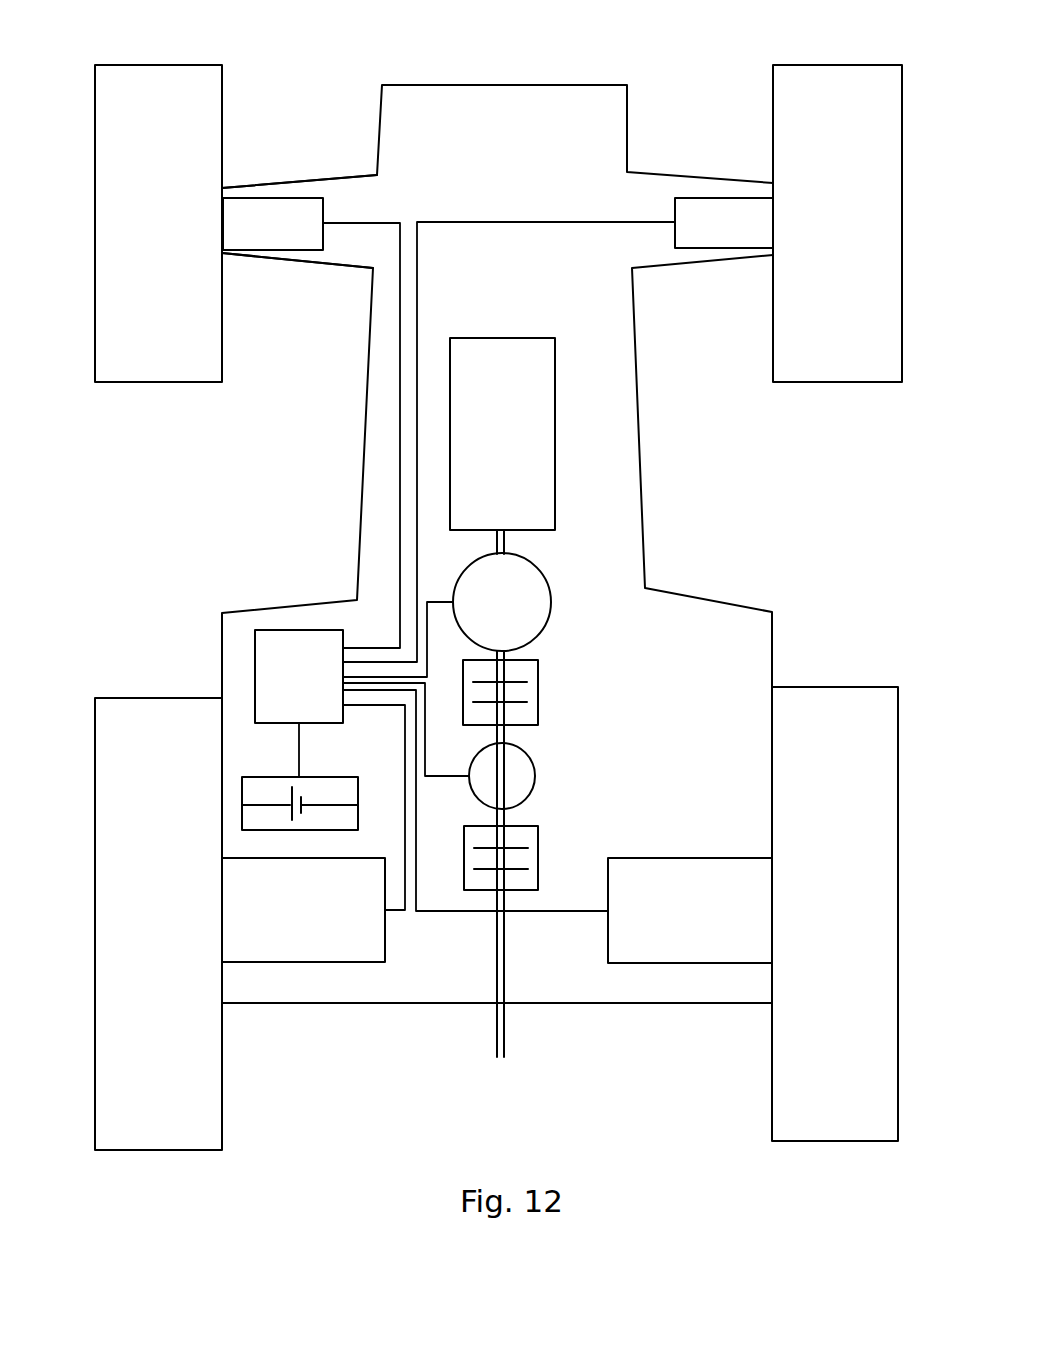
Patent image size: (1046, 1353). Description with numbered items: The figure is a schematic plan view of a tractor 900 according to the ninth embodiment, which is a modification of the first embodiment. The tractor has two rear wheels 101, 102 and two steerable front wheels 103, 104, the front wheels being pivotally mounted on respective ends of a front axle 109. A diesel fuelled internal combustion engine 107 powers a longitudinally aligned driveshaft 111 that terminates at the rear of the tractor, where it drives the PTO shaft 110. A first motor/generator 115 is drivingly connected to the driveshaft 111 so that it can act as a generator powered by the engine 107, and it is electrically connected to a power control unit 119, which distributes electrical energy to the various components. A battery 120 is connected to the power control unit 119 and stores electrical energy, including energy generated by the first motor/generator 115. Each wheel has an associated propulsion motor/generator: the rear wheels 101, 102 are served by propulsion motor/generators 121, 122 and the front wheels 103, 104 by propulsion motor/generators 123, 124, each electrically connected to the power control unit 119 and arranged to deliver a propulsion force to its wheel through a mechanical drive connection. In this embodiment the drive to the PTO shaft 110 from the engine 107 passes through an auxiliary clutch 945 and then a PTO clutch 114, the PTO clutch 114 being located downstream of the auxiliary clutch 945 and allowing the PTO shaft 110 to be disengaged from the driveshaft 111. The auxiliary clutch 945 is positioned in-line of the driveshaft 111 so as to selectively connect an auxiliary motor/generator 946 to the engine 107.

The tractor 900 is at (324, 50).
The rear wheel 101 is at (105, 1150).
The rear wheel 102 is at (869, 1141).
The front wheel 103 is at (132, 382).
The front wheel 104 is at (862, 382).
The internal combustion engine 107 is at (518, 447).
The front axle 109 is at (306, 178).
The PTO shaft 110 is at (507, 1038).
The driveshaft 111 is at (506, 543).
The PTO clutch 114 is at (539, 852).
The first motor/generator 115 is at (551, 616).
The power control unit 119 is at (310, 698).
The battery 120 is at (348, 787).
The propulsion motor/generator 121 is at (308, 962).
The propulsion motor/generator 122 is at (684, 963).
The propulsion motor/generator 123 is at (270, 250).
The propulsion motor/generator 124 is at (722, 248).
The auxiliary clutch 945 is at (538, 695).
The auxiliary motor/generator 946 is at (536, 768).